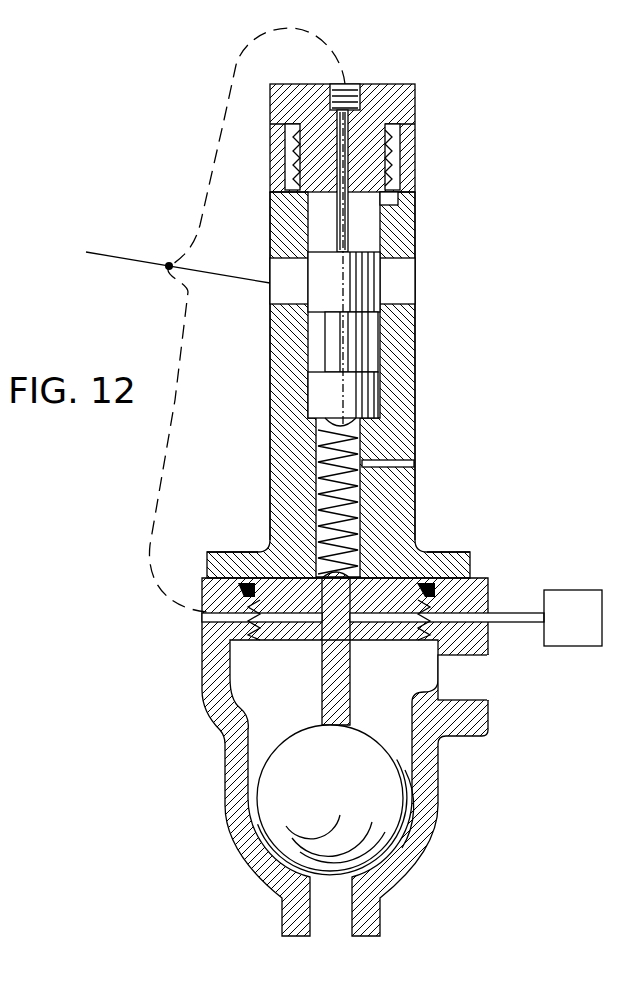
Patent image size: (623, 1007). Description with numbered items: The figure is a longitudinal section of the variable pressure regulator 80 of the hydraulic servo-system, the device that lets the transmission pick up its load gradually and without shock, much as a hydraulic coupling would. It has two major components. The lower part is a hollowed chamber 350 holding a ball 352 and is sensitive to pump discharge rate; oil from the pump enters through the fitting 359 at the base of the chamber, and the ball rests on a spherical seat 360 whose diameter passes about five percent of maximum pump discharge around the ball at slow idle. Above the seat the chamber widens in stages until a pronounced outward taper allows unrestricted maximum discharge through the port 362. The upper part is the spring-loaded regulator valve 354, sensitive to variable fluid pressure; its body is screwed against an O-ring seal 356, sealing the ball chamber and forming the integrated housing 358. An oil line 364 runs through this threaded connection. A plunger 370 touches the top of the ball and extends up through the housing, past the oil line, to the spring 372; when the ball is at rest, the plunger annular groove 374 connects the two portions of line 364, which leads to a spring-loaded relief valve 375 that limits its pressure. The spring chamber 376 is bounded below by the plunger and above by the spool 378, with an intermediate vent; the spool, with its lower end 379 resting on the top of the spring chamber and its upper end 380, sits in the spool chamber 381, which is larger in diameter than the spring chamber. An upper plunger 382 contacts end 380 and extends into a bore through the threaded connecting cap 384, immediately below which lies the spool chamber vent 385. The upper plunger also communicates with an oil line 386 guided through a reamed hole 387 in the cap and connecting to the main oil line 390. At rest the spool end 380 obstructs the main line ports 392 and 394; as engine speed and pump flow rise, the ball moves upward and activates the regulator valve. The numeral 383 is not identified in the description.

The variable pressure regulator 80 is at (211, 498).
The lower hollowed chamber 350 is at (385, 746).
The ball 352 is at (413, 763).
The spring-loaded regulator valve 354 is at (268, 462).
The O-ring seal 356 is at (245, 578).
The integrated housing 358 is at (393, 566).
The fitting 359 is at (333, 903).
The spherical seat 360 is at (270, 870).
The port 362 is at (467, 676).
The oil line 364 is at (292, 642).
The plunger 370 is at (397, 751).
The spring 372 is at (356, 438).
The plunger annular groove 374 is at (378, 643).
The spring-loaded relief valve 375 is at (569, 590).
The spring chamber 376 is at (340, 497).
The spool 378 is at (343, 353).
The spool end 379 is at (360, 404).
The spool end 380 is at (353, 298).
The spool chamber 381 is at (315, 350).
The upper plunger 382 is at (347, 212).
The passage 383 is at (390, 463).
The threaded connecting cap 384 is at (403, 97).
The spool chamber vent 385 is at (395, 200).
The oil line 386 is at (232, 104).
The reamed hole 387 is at (343, 140).
The main oil line 390 is at (107, 258).
The main line port 392 is at (283, 292).
The main line port 394 is at (400, 290).